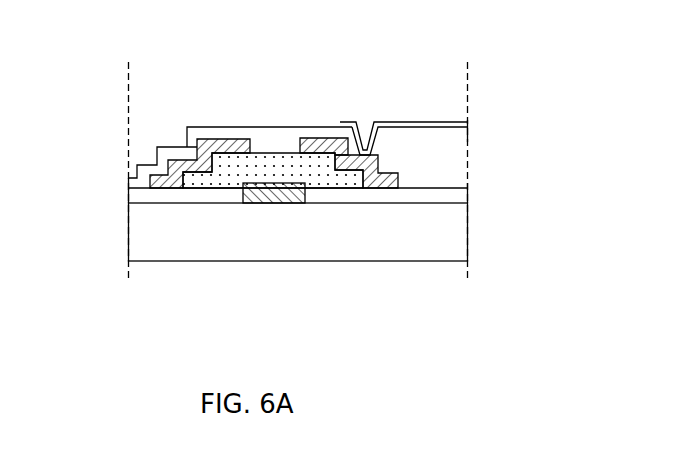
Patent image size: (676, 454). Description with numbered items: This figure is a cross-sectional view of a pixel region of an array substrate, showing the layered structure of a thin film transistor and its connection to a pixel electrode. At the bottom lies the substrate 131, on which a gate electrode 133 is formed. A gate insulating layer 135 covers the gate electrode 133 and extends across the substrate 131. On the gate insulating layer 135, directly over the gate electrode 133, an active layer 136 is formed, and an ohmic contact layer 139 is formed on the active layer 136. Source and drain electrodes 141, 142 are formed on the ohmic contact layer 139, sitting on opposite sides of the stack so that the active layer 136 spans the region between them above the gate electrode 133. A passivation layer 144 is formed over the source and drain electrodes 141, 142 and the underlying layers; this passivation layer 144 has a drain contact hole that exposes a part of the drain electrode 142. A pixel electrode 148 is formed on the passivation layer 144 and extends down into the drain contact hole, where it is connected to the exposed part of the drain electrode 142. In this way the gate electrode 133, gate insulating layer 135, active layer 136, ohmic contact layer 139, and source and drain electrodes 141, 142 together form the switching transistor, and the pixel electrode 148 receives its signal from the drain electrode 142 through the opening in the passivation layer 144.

The substrate 131 is at (372, 244).
The gate electrode 133 is at (268, 192).
The gate insulating layer 135 is at (138, 195).
The active layer 136 is at (235, 153).
The ohmic contact layer 139 is at (303, 138).
The source electrode 141 is at (203, 139).
The drain electrode 142 is at (326, 138).
The passivation layer 144 is at (173, 149).
The pixel electrode 148 is at (407, 122).